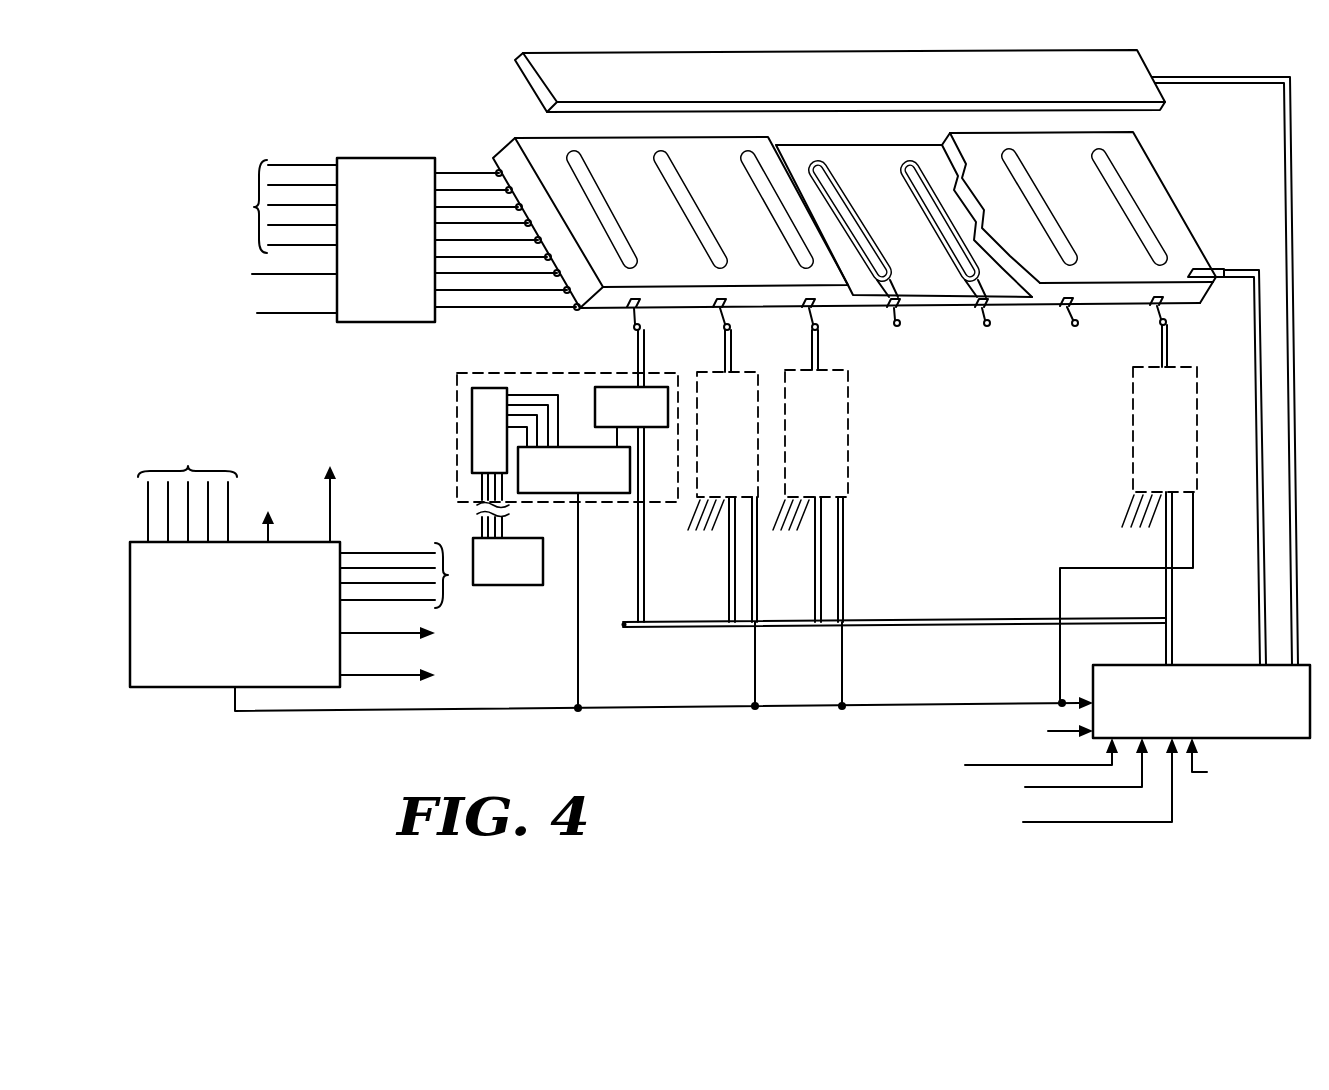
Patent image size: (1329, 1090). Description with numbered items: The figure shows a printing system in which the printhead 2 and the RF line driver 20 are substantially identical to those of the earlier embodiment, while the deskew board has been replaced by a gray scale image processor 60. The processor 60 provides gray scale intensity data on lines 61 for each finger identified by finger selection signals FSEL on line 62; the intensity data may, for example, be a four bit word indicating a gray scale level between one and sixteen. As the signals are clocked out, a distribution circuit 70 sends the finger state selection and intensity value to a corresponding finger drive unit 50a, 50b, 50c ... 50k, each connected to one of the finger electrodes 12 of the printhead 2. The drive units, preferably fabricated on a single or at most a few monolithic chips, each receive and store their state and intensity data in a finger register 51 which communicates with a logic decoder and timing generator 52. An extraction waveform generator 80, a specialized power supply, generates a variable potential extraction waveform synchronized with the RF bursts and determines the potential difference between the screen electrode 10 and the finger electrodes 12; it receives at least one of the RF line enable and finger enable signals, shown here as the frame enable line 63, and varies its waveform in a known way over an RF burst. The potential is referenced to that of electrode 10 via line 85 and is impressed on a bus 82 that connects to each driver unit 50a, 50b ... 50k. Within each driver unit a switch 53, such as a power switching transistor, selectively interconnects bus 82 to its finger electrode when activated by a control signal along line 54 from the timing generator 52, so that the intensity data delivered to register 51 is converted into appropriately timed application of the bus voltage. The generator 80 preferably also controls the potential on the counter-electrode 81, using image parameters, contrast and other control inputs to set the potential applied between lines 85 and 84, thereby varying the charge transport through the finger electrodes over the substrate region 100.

The printhead 2 is at (1150, 129).
The screen electrode 10 is at (735, 144).
The finger electrode 12 is at (850, 217).
The RF line driver 20 is at (378, 163).
The finger drive unit 50a is at (560, 380).
The finger drive unit 50b is at (740, 442).
The finger drive unit 50c is at (830, 442).
The finger drive unit 50k is at (1180, 437).
The finger register 51 is at (497, 434).
The logic decoder and timing generator 52 is at (583, 447).
The switch 53 is at (648, 387).
The control signal line 54 is at (620, 437).
The gray scale image processor 60 is at (245, 671).
The intensity data lines 61 is at (402, 571).
The finger selection signal line 62 is at (390, 677).
The frame enable line 63 is at (383, 713).
The distribution circuit 70 is at (517, 574).
The extraction waveform generator 80 is at (1263, 714).
The counter-electrode 81 is at (848, 84).
The bus 82 is at (902, 618).
The counter-electrode line 84 is at (1284, 203).
The screen reference line 85 is at (1257, 535).
The substrate region 100 is at (925, 484).